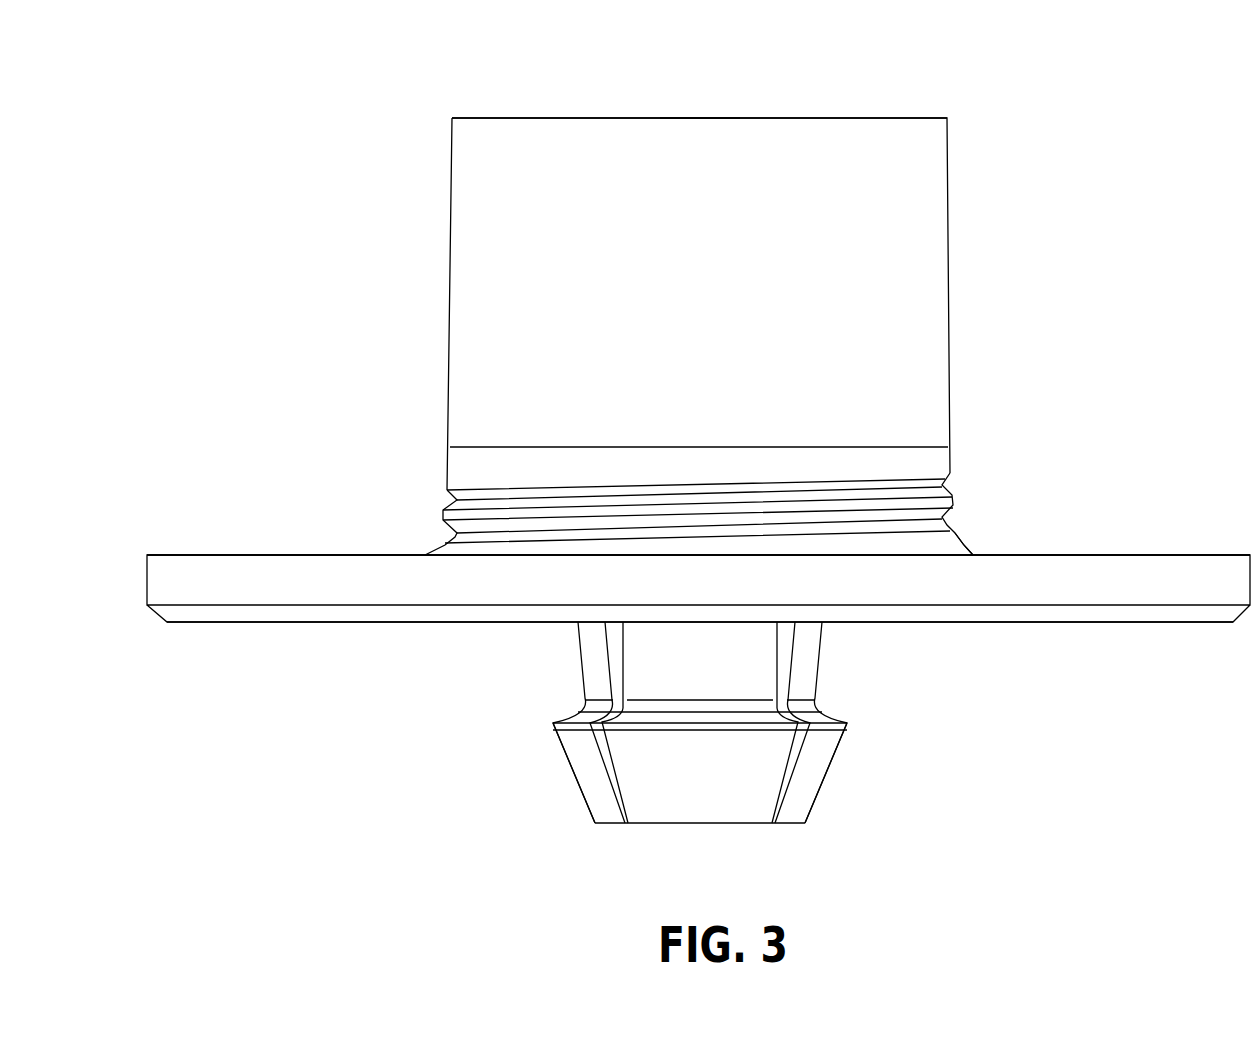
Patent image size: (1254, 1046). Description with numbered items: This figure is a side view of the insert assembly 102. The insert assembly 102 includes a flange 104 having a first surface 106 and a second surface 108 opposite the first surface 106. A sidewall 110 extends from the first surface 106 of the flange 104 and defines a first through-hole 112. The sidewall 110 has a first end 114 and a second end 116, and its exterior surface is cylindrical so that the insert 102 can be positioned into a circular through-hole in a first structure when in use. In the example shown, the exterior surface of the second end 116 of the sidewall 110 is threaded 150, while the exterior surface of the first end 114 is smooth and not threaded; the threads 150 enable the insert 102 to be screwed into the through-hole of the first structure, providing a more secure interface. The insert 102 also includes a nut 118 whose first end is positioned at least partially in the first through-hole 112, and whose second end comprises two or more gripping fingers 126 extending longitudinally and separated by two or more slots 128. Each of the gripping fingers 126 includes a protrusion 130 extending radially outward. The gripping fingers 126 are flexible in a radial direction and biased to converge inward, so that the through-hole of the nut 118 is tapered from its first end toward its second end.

The insert assembly 102 is at (168, 90).
The flange 104 is at (270, 568).
The first surface 106 is at (305, 550).
The second surface 108 is at (327, 623).
The sidewall 110 is at (465, 275).
The first through-hole 112 is at (705, 190).
The first end 114 is at (445, 121).
The second end 116 is at (978, 542).
The nut 118 is at (577, 655).
The gripping fingers 126 is at (658, 782).
The slots 128 is at (785, 648).
The protrusion 130 is at (580, 748).
The threads 150 is at (948, 487).